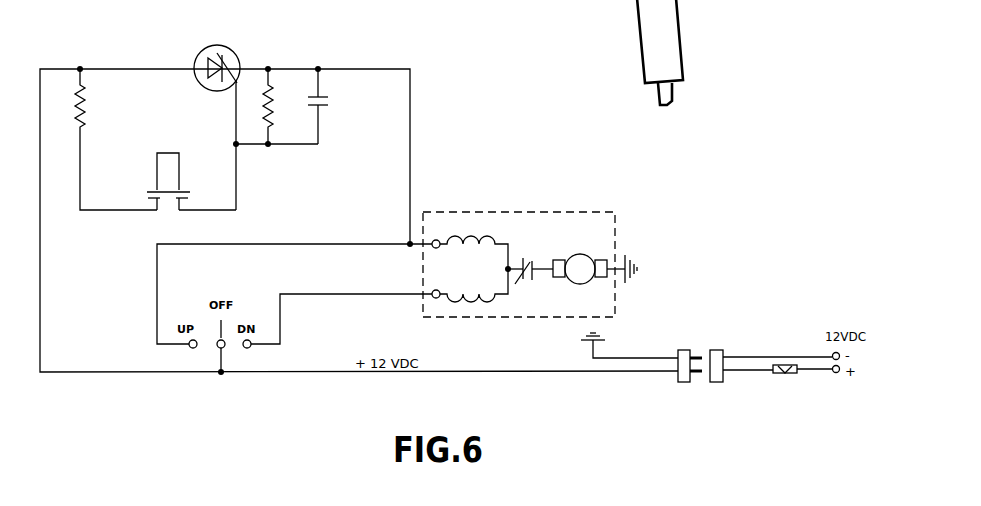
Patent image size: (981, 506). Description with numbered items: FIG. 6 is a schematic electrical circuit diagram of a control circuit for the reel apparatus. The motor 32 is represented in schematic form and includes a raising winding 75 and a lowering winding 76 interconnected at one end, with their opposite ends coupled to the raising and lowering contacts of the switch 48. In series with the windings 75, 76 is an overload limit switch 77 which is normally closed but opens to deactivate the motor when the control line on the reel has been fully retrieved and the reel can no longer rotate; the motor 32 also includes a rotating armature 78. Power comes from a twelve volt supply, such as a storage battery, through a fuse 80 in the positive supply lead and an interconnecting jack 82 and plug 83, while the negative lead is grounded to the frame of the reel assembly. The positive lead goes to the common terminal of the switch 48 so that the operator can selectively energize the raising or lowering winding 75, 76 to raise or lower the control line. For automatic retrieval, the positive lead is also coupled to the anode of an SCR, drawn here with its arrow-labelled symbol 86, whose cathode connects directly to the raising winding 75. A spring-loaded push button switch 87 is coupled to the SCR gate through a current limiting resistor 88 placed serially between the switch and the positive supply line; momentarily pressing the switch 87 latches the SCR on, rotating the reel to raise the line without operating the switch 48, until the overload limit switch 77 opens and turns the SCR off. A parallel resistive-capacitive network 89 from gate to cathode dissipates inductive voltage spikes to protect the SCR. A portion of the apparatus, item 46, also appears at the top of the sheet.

The motor 32 is at (530, 210).
The hydraulic cylinder 46 is at (676, 2).
The switch 48 is at (272, 349).
The raising winding 75 is at (493, 236).
The lowering winding 76 is at (493, 307).
The overload limit switch 77 is at (530, 262).
The rotating armature 78 is at (577, 283).
The fuse 80 is at (785, 374).
The interconnecting jack 82 is at (718, 383).
The plug 83 is at (682, 350).
The light emitting diode 86 is at (222, 36).
The push button switch 87 is at (174, 138).
The current limiting resistor 88 is at (90, 94).
The parallel resistive-capacitive network 89 is at (305, 107).